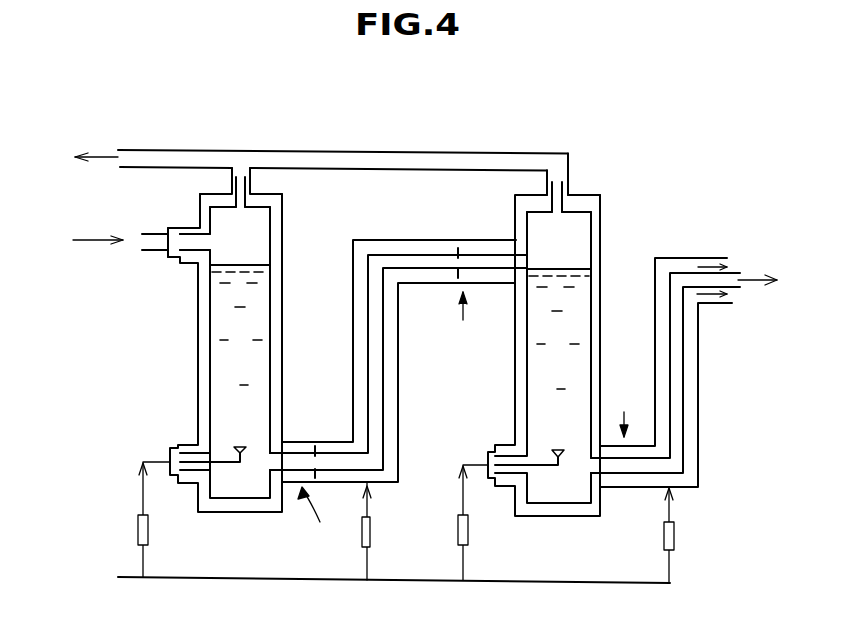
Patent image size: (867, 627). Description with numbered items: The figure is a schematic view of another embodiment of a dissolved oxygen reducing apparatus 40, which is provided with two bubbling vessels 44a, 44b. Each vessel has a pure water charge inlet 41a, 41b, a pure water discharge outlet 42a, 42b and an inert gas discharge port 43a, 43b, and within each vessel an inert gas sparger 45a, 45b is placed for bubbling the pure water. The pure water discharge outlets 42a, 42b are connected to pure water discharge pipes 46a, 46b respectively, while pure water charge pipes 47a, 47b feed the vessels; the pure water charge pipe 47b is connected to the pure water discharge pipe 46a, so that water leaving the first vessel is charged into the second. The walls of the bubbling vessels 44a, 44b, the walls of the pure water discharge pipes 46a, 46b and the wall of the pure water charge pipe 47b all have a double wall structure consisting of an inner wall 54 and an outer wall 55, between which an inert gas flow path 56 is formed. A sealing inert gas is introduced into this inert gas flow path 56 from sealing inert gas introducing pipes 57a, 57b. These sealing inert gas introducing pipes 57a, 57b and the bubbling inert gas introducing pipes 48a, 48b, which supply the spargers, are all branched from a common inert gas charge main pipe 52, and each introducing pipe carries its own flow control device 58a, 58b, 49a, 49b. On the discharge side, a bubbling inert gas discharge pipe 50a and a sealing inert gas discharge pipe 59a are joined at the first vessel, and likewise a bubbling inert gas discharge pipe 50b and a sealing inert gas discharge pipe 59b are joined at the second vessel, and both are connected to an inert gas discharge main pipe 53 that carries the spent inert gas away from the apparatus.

The dissolved oxygen reducing apparatus 40 is at (437, 132).
The pure water charge inlet 41a is at (190, 243).
The pure water charge inlet 41b is at (522, 262).
The pure water discharge outlet 42a is at (285, 458).
The pure water discharge outlet 42b is at (605, 470).
The inert gas discharge port 43a is at (277, 207).
The inert gas discharge port 43b is at (568, 210).
The bubbling vessel 44a is at (195, 348).
The bubbling vessel 44b is at (510, 365).
The inert gas sparger 45a is at (240, 447).
The inert gas sparger 45b is at (558, 447).
The pure water discharge pipe 46a is at (311, 520).
The pure water discharge pipe 46b is at (628, 409).
The pure water charge pipe 47a is at (150, 252).
The pure water charge pipe 47b is at (458, 324).
The bubbling inert gas introducing pipe 48a is at (148, 560).
The bubbling inert gas introducing pipe 48b is at (470, 566).
The flow control device 49a is at (138, 530).
The flow control device 49b is at (470, 528).
The bubbling inert gas discharge pipe 50a is at (236, 181).
The bubbling inert gas discharge pipe 50b is at (565, 205).
The inert gas charge main pipe 52 is at (130, 577).
The inert gas discharge main pipe 53 is at (152, 150).
The inner wall 54 is at (438, 257).
The outer wall 55 is at (383, 238).
The inert gas flow path 56 is at (413, 248).
The sealing inert gas introducing pipe 57a is at (363, 567).
The sealing inert gas introducing pipe 57b is at (670, 567).
The flow control device 58a is at (383, 512).
The flow control device 58b is at (675, 530).
The sealing inert gas discharge pipe 59a is at (258, 182).
The sealing inert gas discharge pipe 59b is at (532, 183).